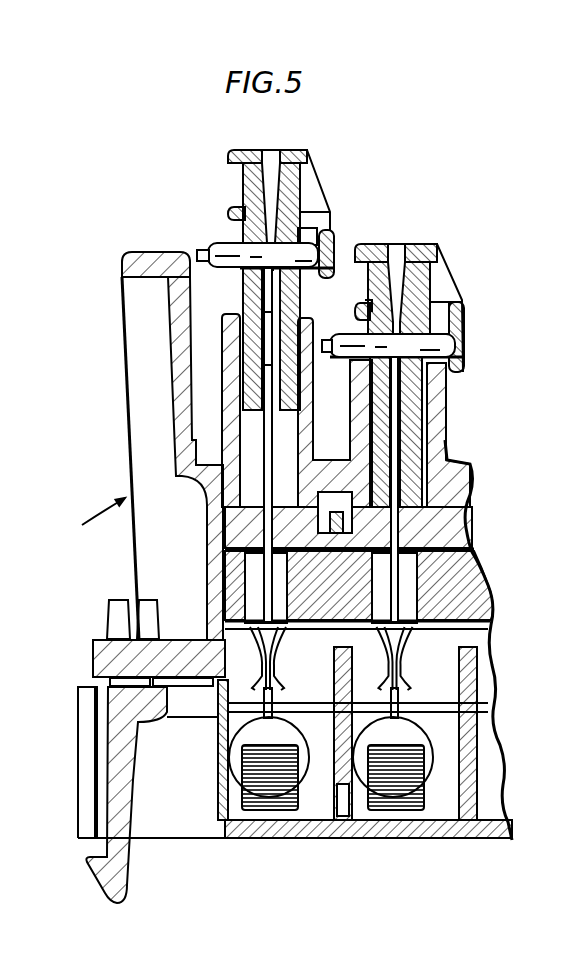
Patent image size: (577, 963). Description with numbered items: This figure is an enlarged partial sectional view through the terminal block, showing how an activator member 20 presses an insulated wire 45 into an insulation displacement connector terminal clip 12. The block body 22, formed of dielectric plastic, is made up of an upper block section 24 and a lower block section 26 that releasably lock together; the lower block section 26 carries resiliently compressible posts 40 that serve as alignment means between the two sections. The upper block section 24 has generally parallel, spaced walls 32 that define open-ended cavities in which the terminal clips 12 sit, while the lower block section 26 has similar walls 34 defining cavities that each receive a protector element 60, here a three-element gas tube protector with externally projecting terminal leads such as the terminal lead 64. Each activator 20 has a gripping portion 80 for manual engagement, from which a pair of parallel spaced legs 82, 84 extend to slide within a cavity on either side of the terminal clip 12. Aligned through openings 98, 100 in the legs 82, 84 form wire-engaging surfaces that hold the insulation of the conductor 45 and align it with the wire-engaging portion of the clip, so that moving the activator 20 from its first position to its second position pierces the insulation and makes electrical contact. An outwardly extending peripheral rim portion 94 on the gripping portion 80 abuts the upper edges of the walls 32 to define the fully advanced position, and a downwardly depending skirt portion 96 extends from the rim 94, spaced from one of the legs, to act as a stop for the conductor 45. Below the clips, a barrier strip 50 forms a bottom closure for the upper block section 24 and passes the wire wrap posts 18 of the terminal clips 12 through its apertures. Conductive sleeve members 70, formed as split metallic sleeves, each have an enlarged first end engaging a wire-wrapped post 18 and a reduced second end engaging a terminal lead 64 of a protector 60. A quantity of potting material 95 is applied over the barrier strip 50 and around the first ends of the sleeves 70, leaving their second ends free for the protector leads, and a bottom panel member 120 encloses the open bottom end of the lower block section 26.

The insulation displacement connector terminal clip 12 is at (267, 420).
The wire wrap post 18 is at (470, 520).
The activator member 20 is at (312, 152).
The block body 22 is at (90, 516).
The upper block section 24 is at (174, 530).
The lower block section 26 is at (85, 700).
The walls 32 is at (236, 378).
The walls 34 is at (478, 752).
The resiliently compressible post 40 is at (112, 607).
The wire 45 is at (212, 248).
The barrier strip 50 is at (476, 542).
The protector element 60 is at (302, 770).
The terminal lead 64 is at (272, 700).
The conductive sleeve member 70 is at (288, 630).
The gripping portion 80 is at (231, 156).
The leg 82 is at (246, 286).
The leg 84 is at (299, 300).
The peripheral rim portion 94 is at (232, 212).
The potting material 95 is at (492, 580).
The skirt portion 96 is at (337, 242).
The through opening 98 is at (268, 271).
The through opening 100 is at (332, 240).
The bottom panel member 120 is at (508, 832).